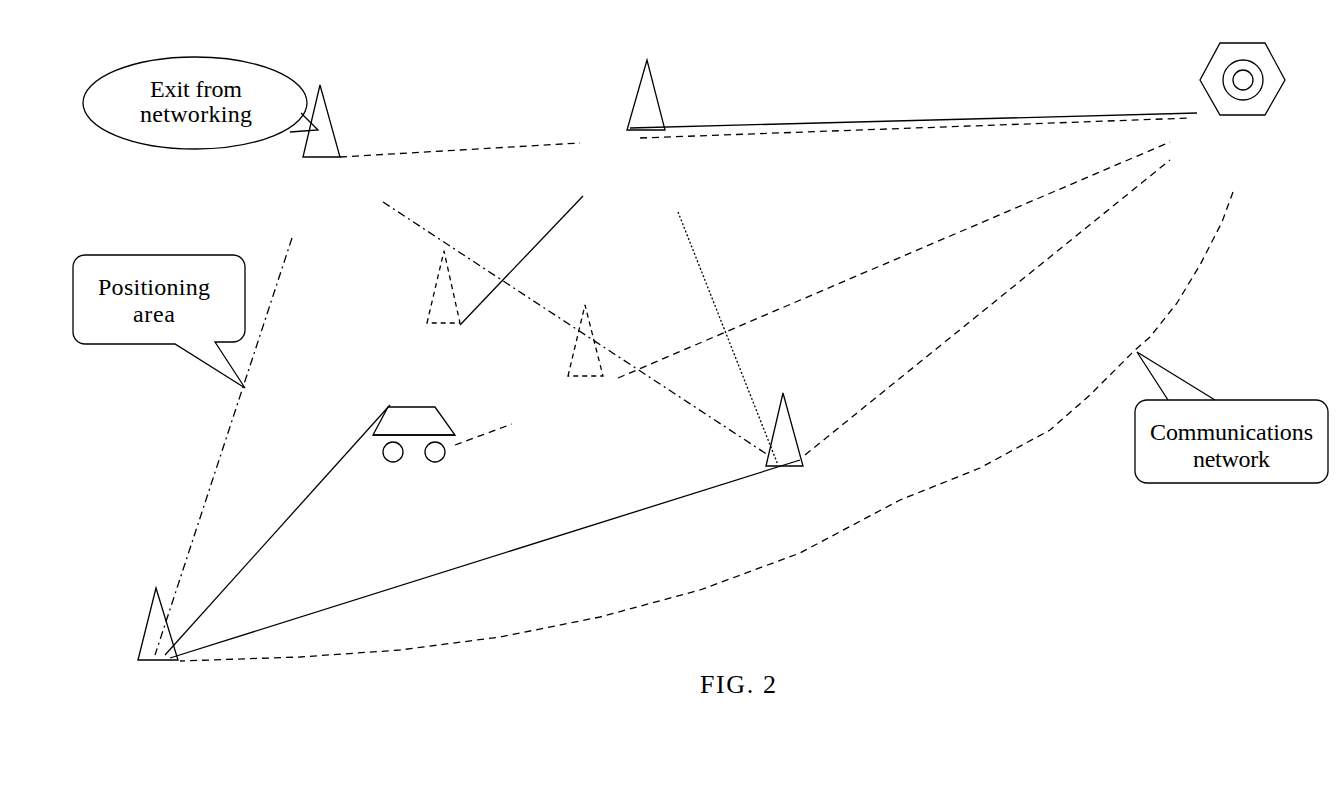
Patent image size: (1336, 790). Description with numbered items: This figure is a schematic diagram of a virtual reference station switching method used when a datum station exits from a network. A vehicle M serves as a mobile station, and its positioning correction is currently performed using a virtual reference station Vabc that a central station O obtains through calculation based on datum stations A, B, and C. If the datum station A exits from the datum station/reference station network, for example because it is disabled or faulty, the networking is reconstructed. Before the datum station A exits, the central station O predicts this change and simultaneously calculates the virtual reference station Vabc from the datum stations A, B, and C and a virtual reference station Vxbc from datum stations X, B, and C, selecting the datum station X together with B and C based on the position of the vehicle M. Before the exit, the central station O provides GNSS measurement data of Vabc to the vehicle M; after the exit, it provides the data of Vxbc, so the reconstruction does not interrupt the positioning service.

The datum station A is at (429, 156).
The datum station B is at (187, 471).
The datum station C is at (501, 525).
The datum station X is at (897, 262).
The central station O is at (732, 352).
The vehicle M is at (338, 530).
The virtual reference station Vabc is at (564, 325).
The virtual reference station Vxbc is at (581, 388).